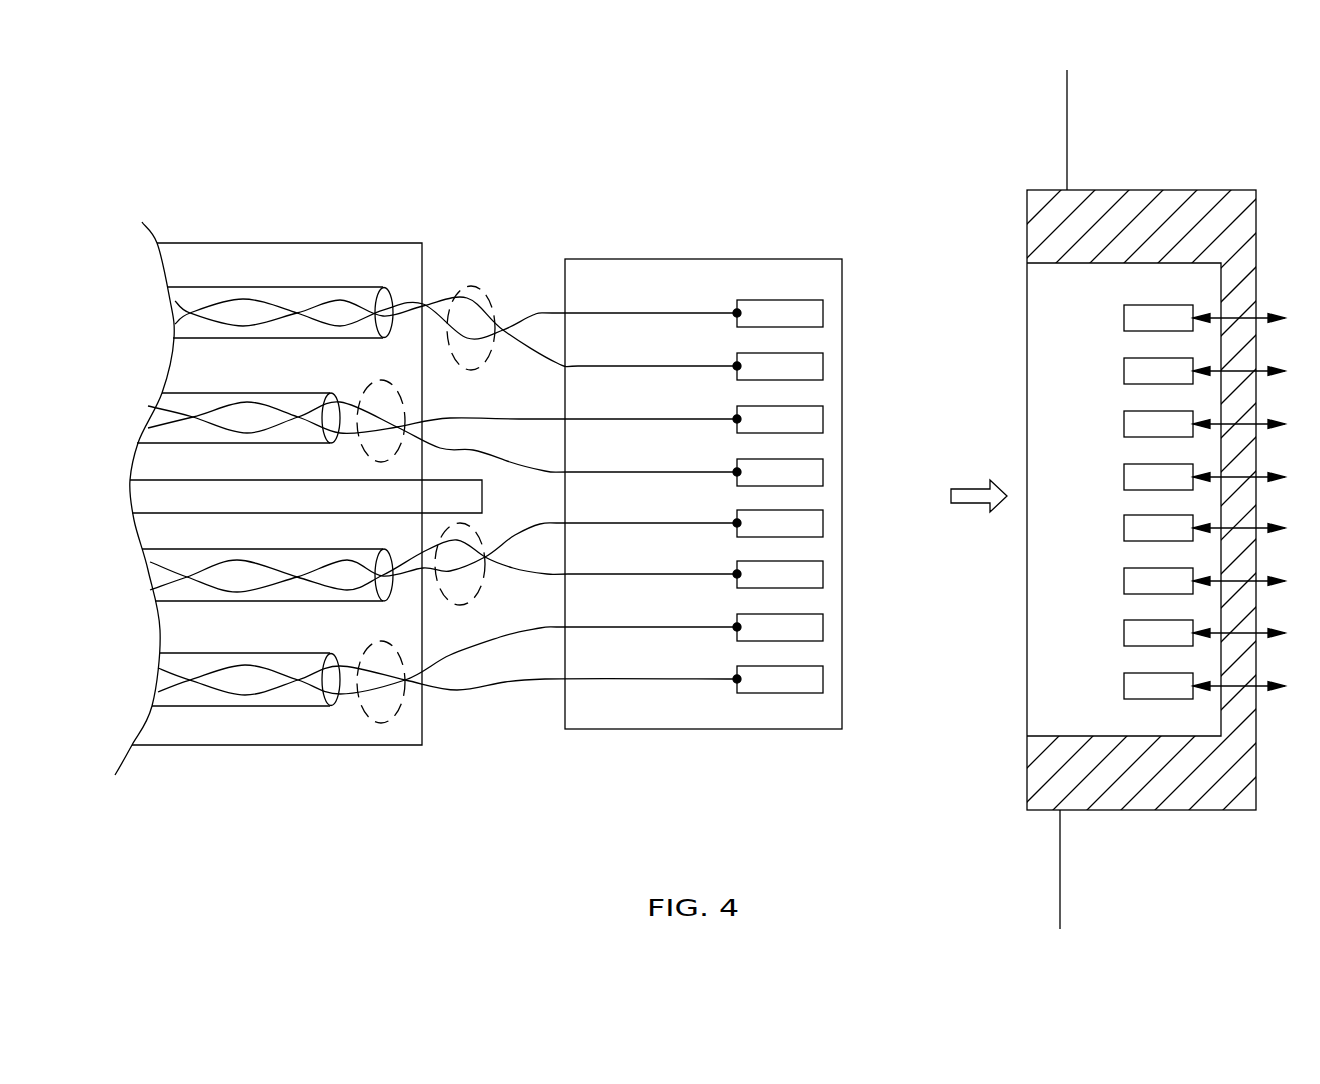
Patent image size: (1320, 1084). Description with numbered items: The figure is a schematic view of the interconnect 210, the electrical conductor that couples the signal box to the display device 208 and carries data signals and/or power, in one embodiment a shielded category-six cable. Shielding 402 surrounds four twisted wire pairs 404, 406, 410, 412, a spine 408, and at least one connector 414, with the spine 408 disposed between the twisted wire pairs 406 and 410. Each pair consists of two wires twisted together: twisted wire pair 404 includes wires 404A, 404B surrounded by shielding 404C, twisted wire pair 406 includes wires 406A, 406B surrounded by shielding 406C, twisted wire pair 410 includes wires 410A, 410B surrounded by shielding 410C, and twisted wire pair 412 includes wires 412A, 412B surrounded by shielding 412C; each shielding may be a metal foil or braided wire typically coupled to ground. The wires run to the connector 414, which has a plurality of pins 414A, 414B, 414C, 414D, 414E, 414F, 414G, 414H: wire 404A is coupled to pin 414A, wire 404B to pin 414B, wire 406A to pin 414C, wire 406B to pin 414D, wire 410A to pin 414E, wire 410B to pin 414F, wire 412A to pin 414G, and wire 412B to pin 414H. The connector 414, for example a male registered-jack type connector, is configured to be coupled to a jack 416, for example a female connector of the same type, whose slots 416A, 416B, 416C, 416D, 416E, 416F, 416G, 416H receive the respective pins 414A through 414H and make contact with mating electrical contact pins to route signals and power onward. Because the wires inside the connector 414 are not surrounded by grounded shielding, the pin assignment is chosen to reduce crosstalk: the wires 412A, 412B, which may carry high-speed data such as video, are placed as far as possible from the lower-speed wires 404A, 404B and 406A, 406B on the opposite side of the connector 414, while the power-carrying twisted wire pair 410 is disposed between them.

The display device 208 is at (1044, 853).
The interconnect 210 is at (772, 155).
The shielding 402 is at (348, 243).
The twisted wire pair 404 is at (474, 286).
The wire 404A is at (702, 314).
The wire 404B is at (630, 366).
The shielding 404C is at (250, 287).
The twisted wire pair 406 is at (388, 381).
The wire 406A is at (615, 419).
The wire 406B is at (615, 472).
The shielding 406C is at (208, 393).
The spine 408 is at (162, 480).
The twisted wire pair 410 is at (458, 606).
The wire 410A is at (635, 523).
The wire 410B is at (632, 574).
The shielding 410C is at (220, 601).
The twisted wire pair 412 is at (379, 724).
The wire 412A is at (645, 627).
The wire 412B is at (695, 680).
The shielding 412C is at (277, 706).
The connector 414 is at (775, 252).
The pin 414A is at (823, 313).
The pin 414B is at (823, 366).
The pin 414C is at (823, 419).
The pin 414D is at (823, 472).
The pin 414E is at (823, 523).
The pin 414F is at (823, 574).
The pin 414G is at (823, 627).
The pin 414H is at (823, 679).
The jack 416 is at (1048, 155).
The slot 416A is at (1168, 305).
The slot 416B is at (1124, 371).
The slot 416C is at (1124, 424).
The slot 416D is at (1124, 477).
The slot 416E is at (1124, 528).
The slot 416F is at (1124, 581).
The slot 416G is at (1124, 633).
The slot 416H is at (1150, 699).